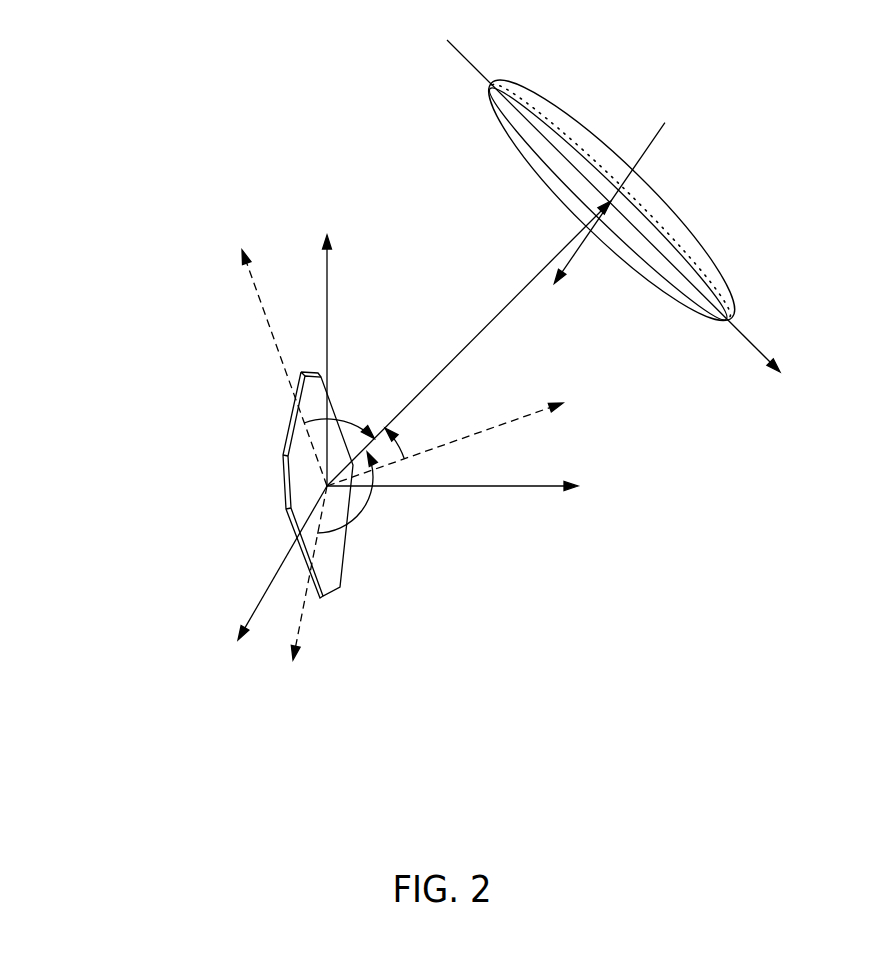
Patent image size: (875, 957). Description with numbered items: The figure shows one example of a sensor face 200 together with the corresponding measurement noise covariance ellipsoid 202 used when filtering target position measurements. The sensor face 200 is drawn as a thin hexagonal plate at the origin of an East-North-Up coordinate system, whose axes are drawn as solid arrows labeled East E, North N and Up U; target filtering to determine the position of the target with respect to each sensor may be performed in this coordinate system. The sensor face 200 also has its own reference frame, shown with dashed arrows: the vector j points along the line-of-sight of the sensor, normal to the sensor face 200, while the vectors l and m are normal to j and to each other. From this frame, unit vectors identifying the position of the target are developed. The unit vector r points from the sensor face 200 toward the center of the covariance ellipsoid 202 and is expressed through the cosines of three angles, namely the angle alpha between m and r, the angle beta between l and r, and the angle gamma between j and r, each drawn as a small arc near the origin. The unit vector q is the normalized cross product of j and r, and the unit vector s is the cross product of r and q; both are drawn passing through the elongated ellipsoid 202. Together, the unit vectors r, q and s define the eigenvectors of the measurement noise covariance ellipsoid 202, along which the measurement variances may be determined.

The sensor face 200 is at (283, 457).
The measurement noise covariance ellipsoid 202 is at (676, 225).
The Up axis U is at (323, 337).
The North axis N is at (472, 480).
The East axis E is at (270, 583).
The unit vector l is at (238, 221).
The unit vector m is at (287, 677).
The line-of-sight vector j is at (530, 386).
The unit vector r is at (537, 238).
The unit vector q is at (576, 262).
The unit vector s is at (734, 352).